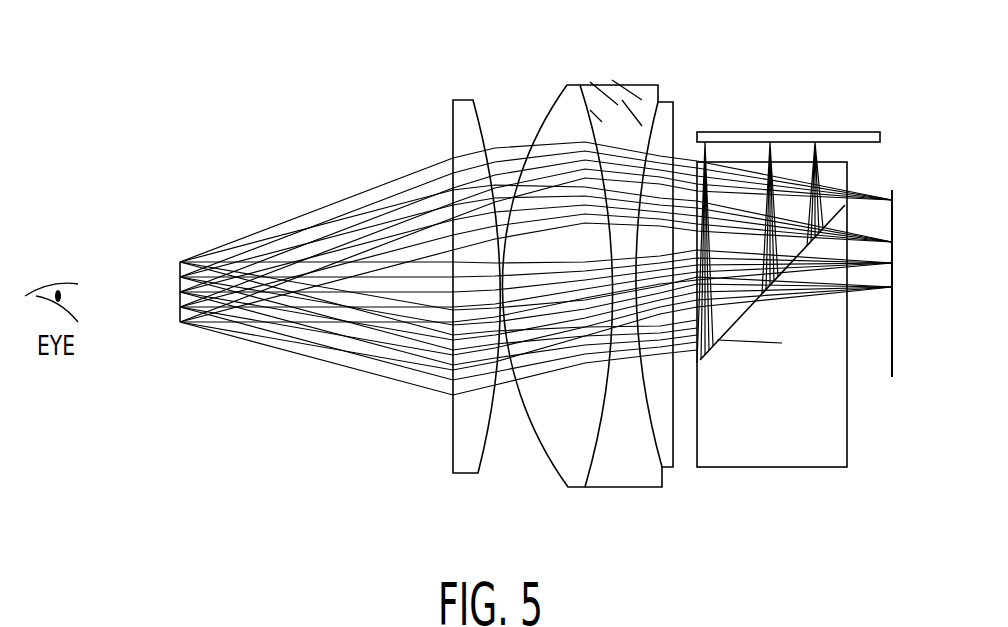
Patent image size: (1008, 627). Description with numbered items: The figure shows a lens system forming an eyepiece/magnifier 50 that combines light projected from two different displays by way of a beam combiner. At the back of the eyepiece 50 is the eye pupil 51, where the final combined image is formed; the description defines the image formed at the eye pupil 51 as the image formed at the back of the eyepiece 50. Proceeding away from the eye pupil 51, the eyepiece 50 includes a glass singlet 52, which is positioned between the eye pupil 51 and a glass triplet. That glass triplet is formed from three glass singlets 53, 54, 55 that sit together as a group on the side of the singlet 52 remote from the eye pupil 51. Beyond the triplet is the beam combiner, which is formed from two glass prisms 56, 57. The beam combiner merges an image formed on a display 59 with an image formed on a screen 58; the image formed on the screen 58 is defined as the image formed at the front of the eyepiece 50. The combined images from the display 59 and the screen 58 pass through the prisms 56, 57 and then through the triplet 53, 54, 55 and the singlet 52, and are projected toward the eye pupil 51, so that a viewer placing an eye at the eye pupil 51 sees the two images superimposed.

The eyepiece/magnifier 50 is at (395, 101).
The eye pupil 51 is at (180, 323).
The glass singlet 52 is at (450, 468).
The glass singlet 53 is at (557, 448).
The glass singlet 54 is at (620, 473).
The glass singlet 55 is at (668, 455).
The glass prism 56 is at (781, 450).
The glass prism 57 is at (835, 177).
The screen 58 is at (892, 378).
The display 59 is at (785, 130).